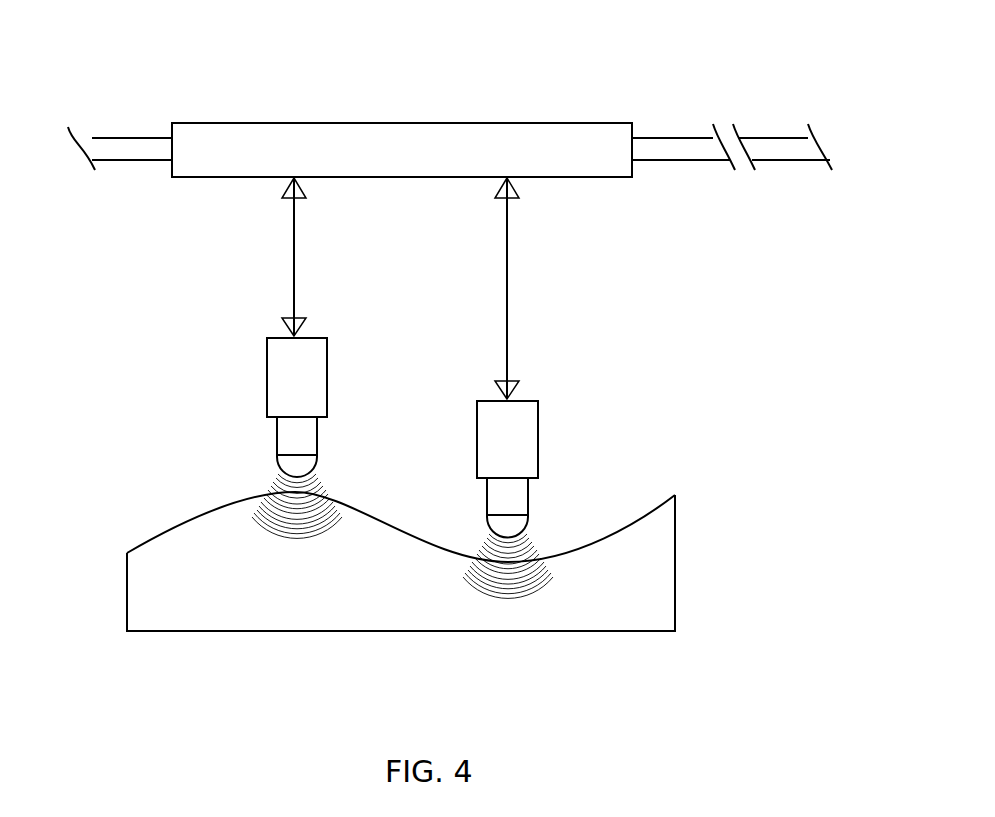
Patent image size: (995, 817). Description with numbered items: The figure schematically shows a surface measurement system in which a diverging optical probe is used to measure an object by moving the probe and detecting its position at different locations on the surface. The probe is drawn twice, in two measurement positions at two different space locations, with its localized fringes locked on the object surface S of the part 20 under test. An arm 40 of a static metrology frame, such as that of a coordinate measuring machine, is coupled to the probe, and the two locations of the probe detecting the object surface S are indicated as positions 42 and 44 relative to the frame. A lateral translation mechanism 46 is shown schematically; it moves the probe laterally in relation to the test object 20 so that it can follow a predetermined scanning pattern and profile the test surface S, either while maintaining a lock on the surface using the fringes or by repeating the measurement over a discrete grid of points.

The arm of a static metrology frame 40 is at (399, 130).
The lateral translation mechanism 46 is at (650, 137).
The first probe position 42 is at (293, 274).
The second probe position 44 is at (508, 325).
The part under test 20 is at (395, 586).
The object surface S is at (170, 530).